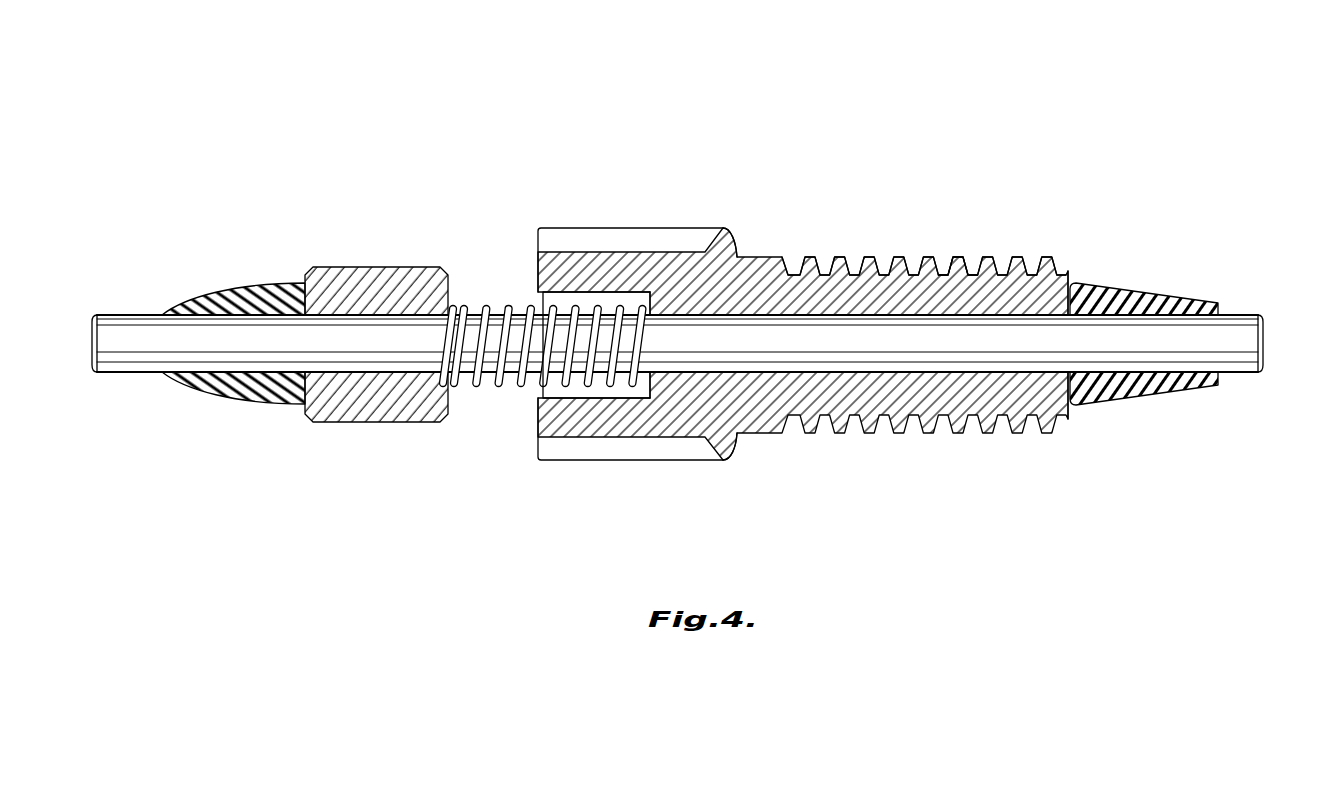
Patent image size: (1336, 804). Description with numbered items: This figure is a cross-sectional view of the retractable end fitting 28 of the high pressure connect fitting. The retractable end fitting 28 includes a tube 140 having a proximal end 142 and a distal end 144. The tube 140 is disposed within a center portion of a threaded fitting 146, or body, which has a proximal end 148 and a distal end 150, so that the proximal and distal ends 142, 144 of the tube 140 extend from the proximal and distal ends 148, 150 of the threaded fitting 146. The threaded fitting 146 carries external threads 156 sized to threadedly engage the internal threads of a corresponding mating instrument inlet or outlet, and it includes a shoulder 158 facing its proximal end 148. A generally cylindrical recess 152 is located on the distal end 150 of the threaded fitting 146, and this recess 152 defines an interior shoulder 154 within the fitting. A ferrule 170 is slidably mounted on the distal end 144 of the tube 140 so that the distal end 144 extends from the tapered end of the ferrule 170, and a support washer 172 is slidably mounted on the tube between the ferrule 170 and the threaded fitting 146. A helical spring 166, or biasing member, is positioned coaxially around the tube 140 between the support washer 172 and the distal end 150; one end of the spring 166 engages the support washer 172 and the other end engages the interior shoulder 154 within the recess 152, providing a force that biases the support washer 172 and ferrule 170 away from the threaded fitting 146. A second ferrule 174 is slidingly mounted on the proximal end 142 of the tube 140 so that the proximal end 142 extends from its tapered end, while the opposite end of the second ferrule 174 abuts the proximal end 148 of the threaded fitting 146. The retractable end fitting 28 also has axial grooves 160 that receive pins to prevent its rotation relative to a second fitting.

The retractable end fitting 28 is at (819, 122).
The tube 140 is at (695, 339).
The proximal end 142 is at (1266, 328).
The distal end 144 is at (93, 357).
The threaded fitting 146 is at (901, 233).
The proximal end 148 is at (1072, 279).
The distal end 150 is at (796, 334).
The cylindrical recess 152 is at (585, 393).
The interior shoulder 154 is at (650, 300).
The external threads 156 is at (958, 258).
The shoulder 158 is at (733, 243).
The axial grooves 160 is at (685, 240).
The helical spring 166 is at (490, 384).
The ferrule 170 is at (242, 401).
The support washer 172 is at (378, 423).
The second ferrule 174 is at (1129, 403).